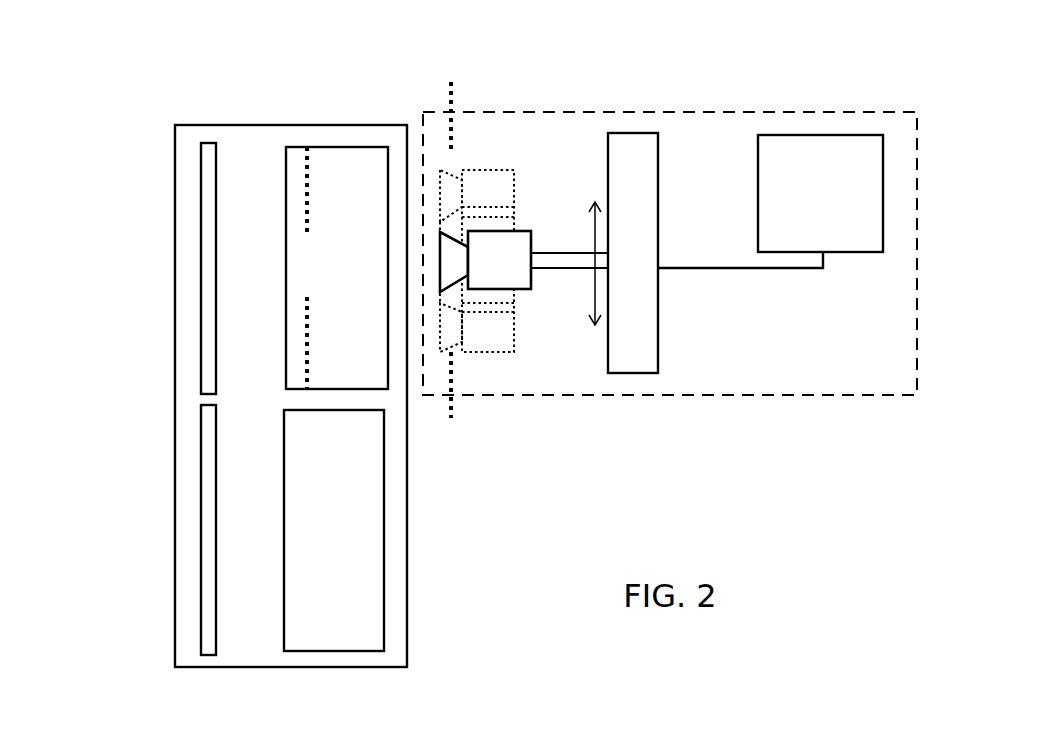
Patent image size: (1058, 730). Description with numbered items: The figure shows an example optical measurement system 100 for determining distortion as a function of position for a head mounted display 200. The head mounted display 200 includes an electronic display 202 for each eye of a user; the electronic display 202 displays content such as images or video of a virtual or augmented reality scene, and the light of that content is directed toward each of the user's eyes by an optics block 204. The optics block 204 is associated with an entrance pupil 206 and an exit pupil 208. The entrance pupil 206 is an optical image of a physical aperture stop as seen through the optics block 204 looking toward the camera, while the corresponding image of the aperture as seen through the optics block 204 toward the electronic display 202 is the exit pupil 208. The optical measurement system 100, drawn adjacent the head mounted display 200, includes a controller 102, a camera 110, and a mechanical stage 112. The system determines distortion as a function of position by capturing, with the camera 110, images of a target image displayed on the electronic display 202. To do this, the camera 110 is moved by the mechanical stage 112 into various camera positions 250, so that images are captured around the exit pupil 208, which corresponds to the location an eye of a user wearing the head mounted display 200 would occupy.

The optical measurement system 100 is at (797, 396).
The controller 102 is at (770, 201).
The camera 110 is at (522, 272).
The mechanical stage 112 is at (653, 375).
The head mounted display 200 is at (176, 125).
The electronic display 202 is at (201, 378).
The optics block 204 is at (388, 379).
The entrance pupil 206 is at (292, 272).
The exit pupil 208 is at (451, 113).
The camera positions 250 is at (529, 144).